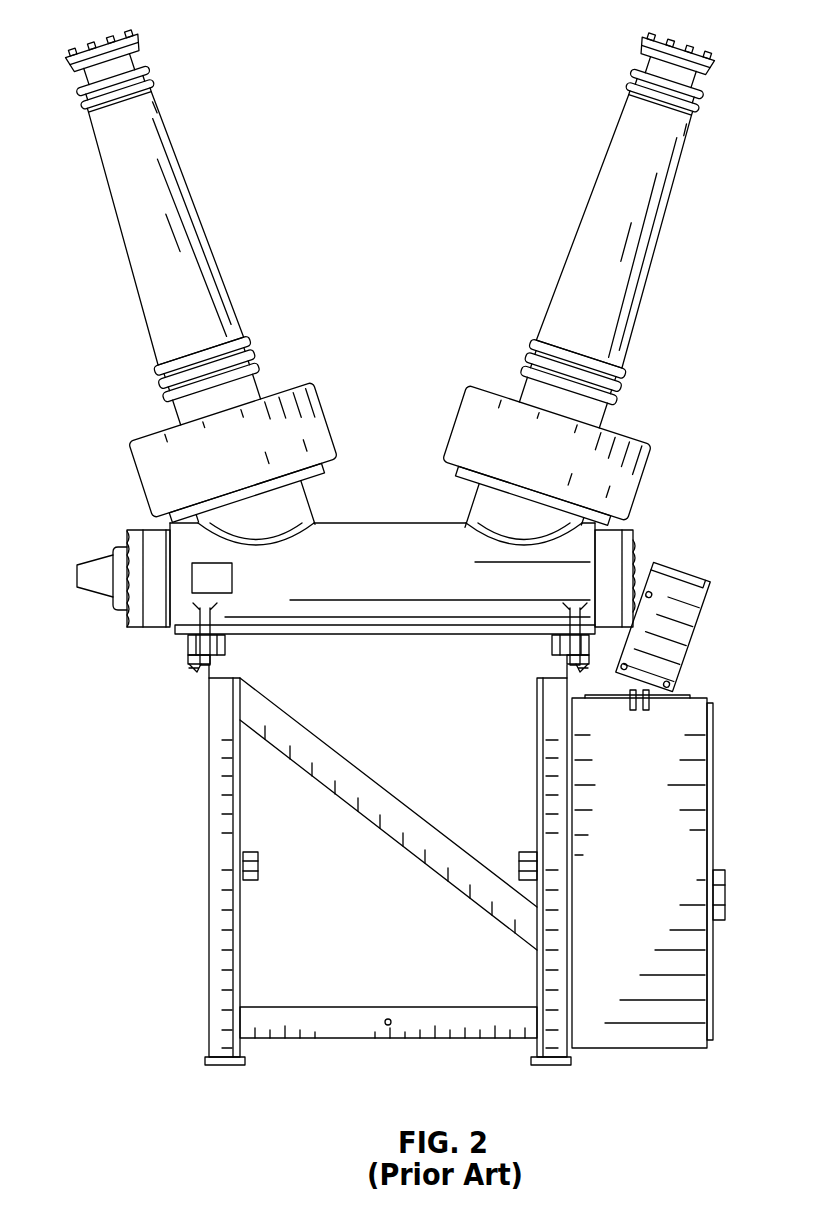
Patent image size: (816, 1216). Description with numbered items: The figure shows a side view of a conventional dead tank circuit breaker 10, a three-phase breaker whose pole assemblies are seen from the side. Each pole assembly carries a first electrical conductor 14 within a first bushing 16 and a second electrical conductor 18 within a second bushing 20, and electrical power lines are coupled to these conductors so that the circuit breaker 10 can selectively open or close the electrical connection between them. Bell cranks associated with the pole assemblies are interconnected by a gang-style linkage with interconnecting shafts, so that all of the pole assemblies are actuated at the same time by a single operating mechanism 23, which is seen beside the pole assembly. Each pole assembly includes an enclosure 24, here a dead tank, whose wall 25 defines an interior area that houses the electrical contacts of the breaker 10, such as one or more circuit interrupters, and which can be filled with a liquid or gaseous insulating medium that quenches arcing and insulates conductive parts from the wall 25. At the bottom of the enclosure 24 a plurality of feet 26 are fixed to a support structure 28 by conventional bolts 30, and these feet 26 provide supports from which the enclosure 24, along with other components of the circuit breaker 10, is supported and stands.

The circuit breaker (prior art) 10 is at (392, 150).
The first terminal cap 14 is at (690, 46).
The first insulator 16 is at (663, 236).
The second terminal cap 18 is at (100, 44).
The second insulator 20 is at (193, 194).
The operating mechanism cabinet 23 is at (700, 681).
The bottom mounting plate 24 is at (423, 623).
The housing body 25 is at (360, 532).
The mounting bracket 26 is at (204, 628).
The nut 28 is at (190, 664).
The washer block 30 is at (227, 647).